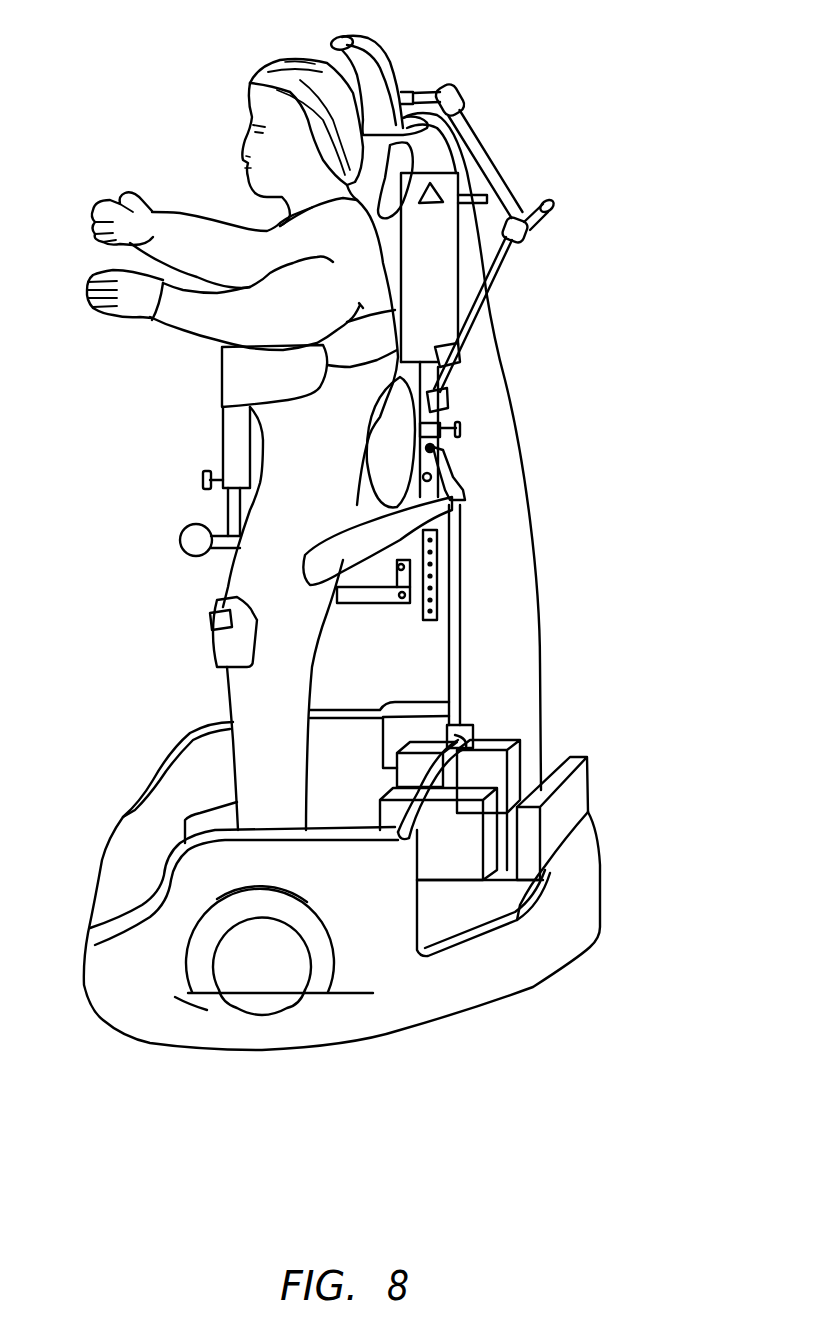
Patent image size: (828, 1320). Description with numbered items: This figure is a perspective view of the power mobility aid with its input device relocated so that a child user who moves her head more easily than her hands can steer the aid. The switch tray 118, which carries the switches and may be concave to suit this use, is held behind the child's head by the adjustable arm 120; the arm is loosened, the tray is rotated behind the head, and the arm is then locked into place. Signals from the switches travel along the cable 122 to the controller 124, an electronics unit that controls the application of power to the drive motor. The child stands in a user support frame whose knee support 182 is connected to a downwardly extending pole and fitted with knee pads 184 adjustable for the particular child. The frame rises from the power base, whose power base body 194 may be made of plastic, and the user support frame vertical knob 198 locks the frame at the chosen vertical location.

The switch tray 118 is at (387, 80).
The adjustable arm 120 is at (490, 175).
The cable 122 is at (527, 480).
The controller 124 is at (573, 797).
The knee support 182 is at (363, 597).
The knee pads 184 is at (225, 647).
The power base body 194 is at (577, 930).
The user support frame vertical knob 198 is at (482, 719).